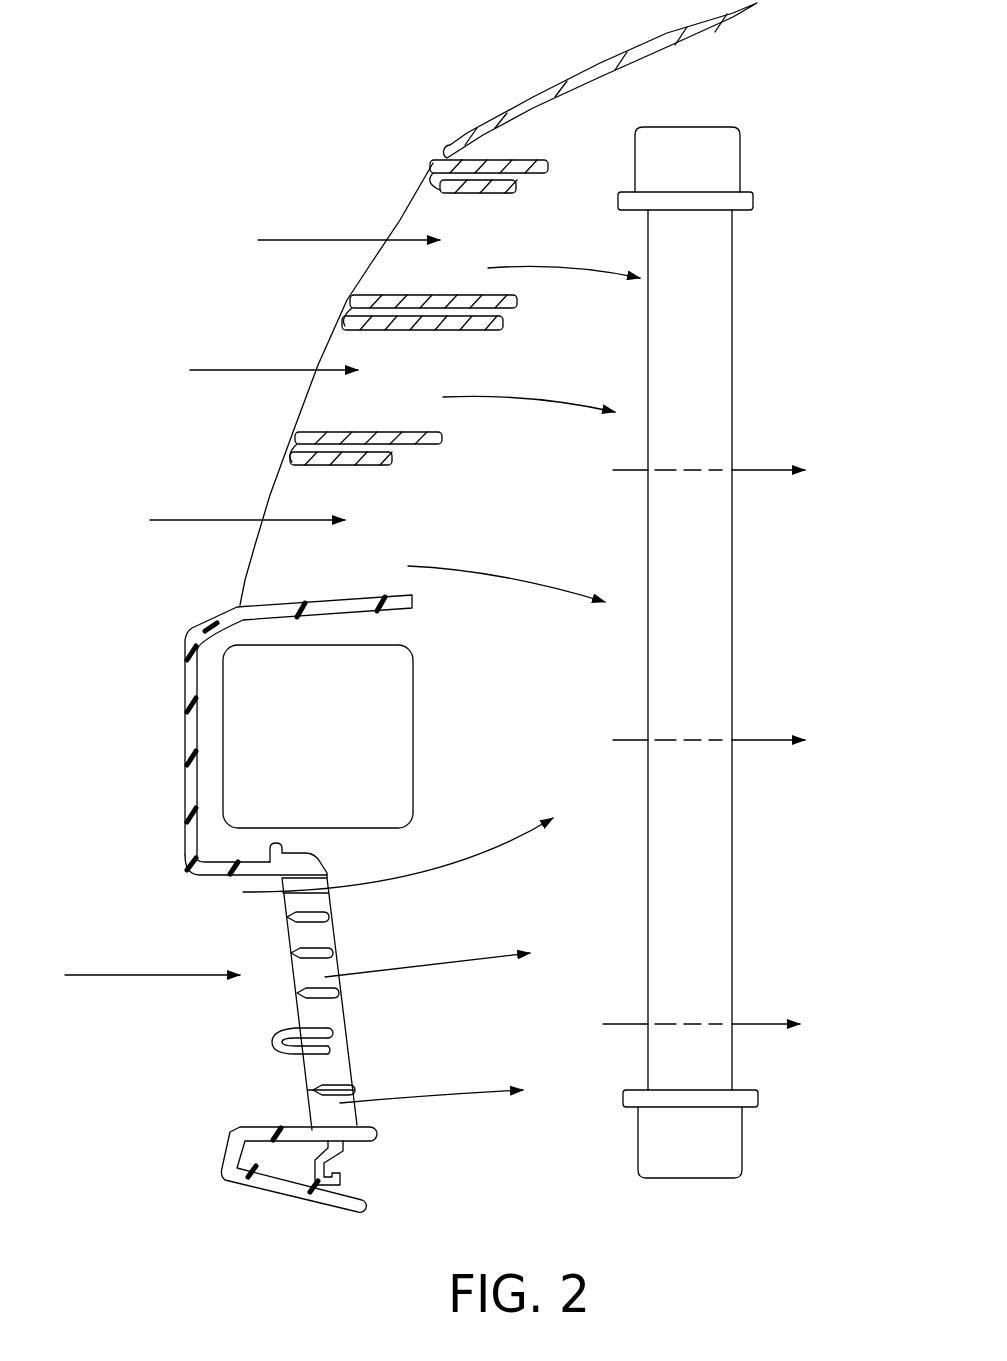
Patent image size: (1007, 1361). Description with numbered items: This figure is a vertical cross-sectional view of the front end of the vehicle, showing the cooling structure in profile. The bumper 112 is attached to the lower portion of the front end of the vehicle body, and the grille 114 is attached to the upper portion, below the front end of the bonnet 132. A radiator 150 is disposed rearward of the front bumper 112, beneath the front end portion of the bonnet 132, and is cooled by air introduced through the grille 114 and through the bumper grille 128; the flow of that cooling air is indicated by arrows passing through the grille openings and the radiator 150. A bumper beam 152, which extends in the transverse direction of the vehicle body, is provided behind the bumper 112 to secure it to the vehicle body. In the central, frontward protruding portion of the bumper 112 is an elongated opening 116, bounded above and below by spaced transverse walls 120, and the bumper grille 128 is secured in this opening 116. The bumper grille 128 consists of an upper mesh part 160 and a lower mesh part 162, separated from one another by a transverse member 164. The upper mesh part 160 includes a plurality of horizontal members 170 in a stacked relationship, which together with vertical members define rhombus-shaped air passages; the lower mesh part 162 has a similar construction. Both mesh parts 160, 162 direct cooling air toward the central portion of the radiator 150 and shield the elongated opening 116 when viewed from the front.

The bumper 112 is at (180, 698).
The grille 114 is at (360, 292).
The elongated opening 116 is at (217, 878).
The transverse walls 120 is at (283, 877).
The grille or mesh 128 is at (258, 1027).
The bonnet 132 is at (507, 95).
The radiator 150 is at (722, 585).
The bumper beam 152 is at (392, 742).
The upper mesh part 160 is at (318, 933).
The lower mesh part 162 is at (340, 1065).
The transverse member 164 is at (273, 1050).
The horizontal members 170 is at (292, 952).